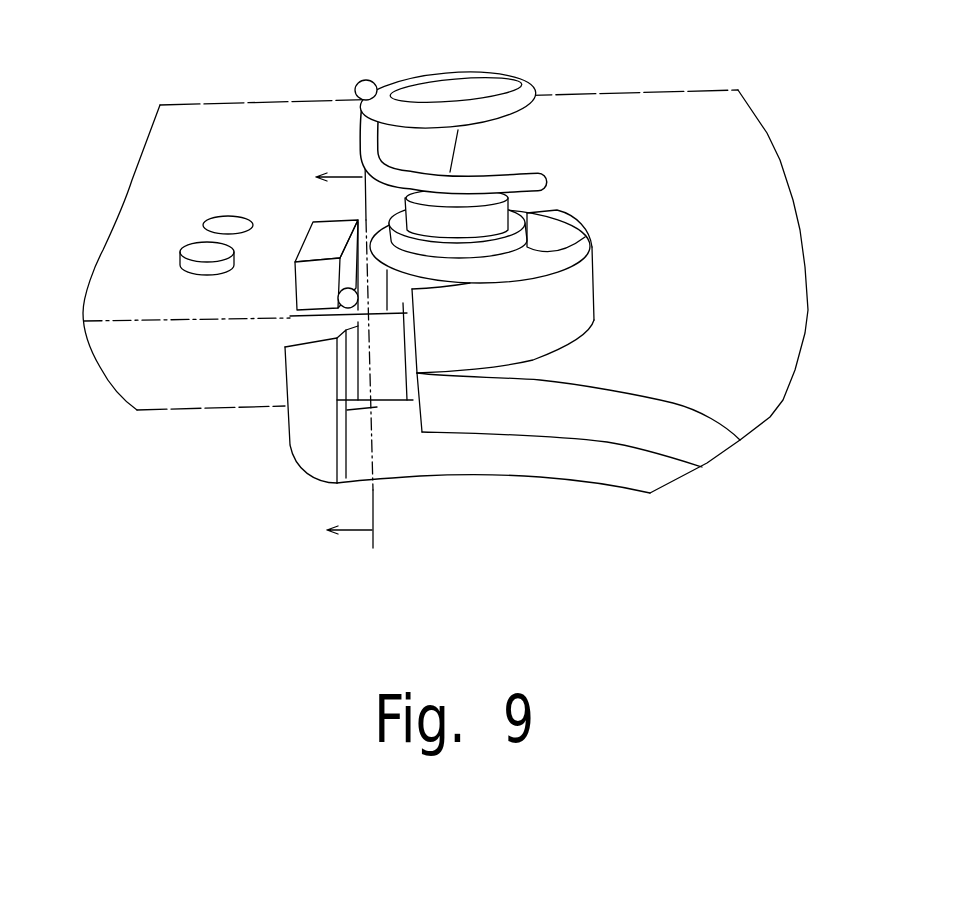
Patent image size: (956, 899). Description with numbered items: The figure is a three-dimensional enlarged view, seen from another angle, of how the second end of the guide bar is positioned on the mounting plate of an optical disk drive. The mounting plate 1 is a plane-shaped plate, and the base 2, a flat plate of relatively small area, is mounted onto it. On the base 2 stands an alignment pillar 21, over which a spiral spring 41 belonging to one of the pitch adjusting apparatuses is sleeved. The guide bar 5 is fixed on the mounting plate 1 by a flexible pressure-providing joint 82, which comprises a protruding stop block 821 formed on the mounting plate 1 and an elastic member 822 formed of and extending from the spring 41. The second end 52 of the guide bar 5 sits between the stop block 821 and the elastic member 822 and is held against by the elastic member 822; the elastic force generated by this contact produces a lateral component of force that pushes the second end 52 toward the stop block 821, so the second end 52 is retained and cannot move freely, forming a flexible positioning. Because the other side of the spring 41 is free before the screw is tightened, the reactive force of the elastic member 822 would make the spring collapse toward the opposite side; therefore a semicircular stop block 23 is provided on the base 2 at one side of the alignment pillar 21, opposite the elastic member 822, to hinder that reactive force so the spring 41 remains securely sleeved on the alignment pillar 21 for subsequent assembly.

The mounting plate 1 is at (445, 298).
The base 2 is at (597, 415).
The guide bar 5 is at (168, 418).
The alignment pillar 21 is at (572, 205).
The semicircular stop block 23 is at (568, 305).
The spiral spring 41 is at (503, 88).
The second end of the guide bar 52 is at (358, 400).
The flexible pressure-providing joint 82 is at (269, 233).
The protruding stop block 821 is at (290, 345).
The elastic member 822 is at (338, 318).